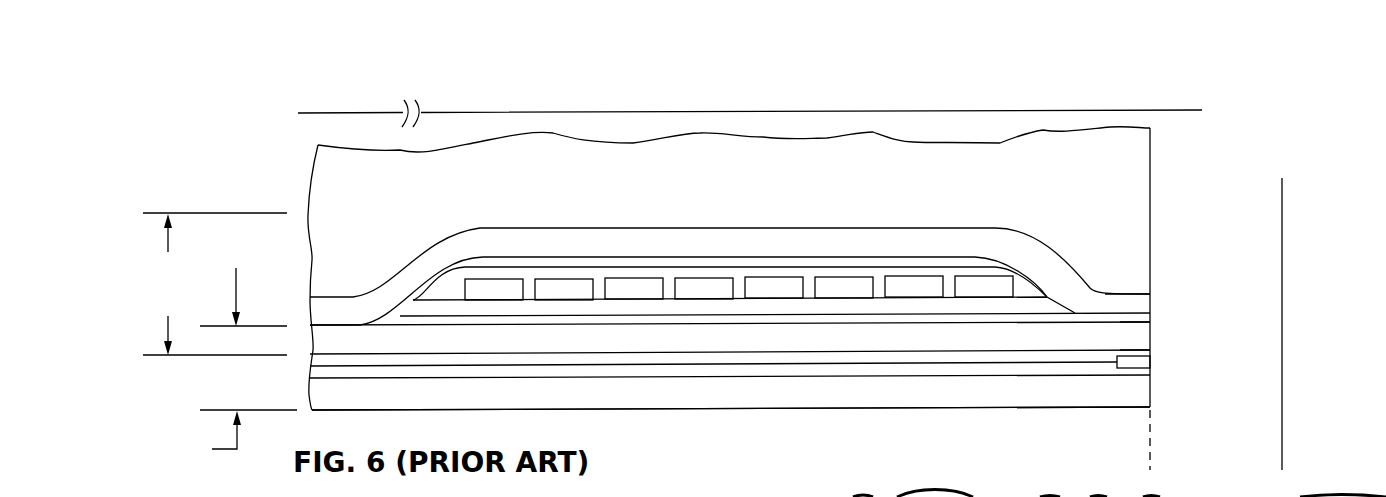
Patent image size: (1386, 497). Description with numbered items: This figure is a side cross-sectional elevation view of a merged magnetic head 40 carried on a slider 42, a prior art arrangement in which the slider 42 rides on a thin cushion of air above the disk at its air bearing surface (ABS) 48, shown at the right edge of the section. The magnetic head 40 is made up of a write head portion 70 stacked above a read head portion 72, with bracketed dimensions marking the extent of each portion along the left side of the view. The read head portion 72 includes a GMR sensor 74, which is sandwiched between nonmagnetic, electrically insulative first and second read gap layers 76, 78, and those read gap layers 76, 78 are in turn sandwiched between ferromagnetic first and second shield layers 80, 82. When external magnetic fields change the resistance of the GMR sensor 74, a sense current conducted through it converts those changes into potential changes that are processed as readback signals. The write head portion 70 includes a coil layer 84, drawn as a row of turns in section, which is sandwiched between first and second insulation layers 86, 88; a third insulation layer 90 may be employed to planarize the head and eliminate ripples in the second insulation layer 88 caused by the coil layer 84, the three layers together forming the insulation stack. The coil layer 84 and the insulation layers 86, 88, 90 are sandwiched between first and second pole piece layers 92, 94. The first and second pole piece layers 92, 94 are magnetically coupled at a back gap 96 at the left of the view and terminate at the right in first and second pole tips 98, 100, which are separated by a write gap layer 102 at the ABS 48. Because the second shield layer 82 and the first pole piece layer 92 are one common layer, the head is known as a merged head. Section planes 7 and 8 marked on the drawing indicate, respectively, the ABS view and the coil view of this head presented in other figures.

The plane 7- 7 is at (1298, 200).
The plane 8- 8 is at (320, 102).
The magnetic head 40 is at (282, 157).
The slider 42 is at (1128, 163).
The air bearing surface (ABS) 48 is at (1160, 437).
The write head portion 70 is at (188, 284).
The read head portion 72 is at (193, 434).
The GMR sensor 74 is at (1150, 363).
The first read gap layer 76 is at (797, 376).
The second read gap layer 78 is at (757, 350).
The first shield layer 80 is at (895, 388).
The second shield layer 82 is at (730, 389).
The coil layer 84 is at (773, 287).
The first insulation layer 86 is at (687, 307).
The second insulation layer 88 is at (1023, 290).
The third insulation layer 90 is at (490, 265).
The first pole piece layer 92 is at (992, 338).
The second pole piece layer 94 is at (890, 232).
The back gap 96 is at (338, 325).
The first pole tip 98 is at (1150, 338).
The second pole tip 100 is at (1142, 302).
The write gap layer 102 is at (1150, 315).